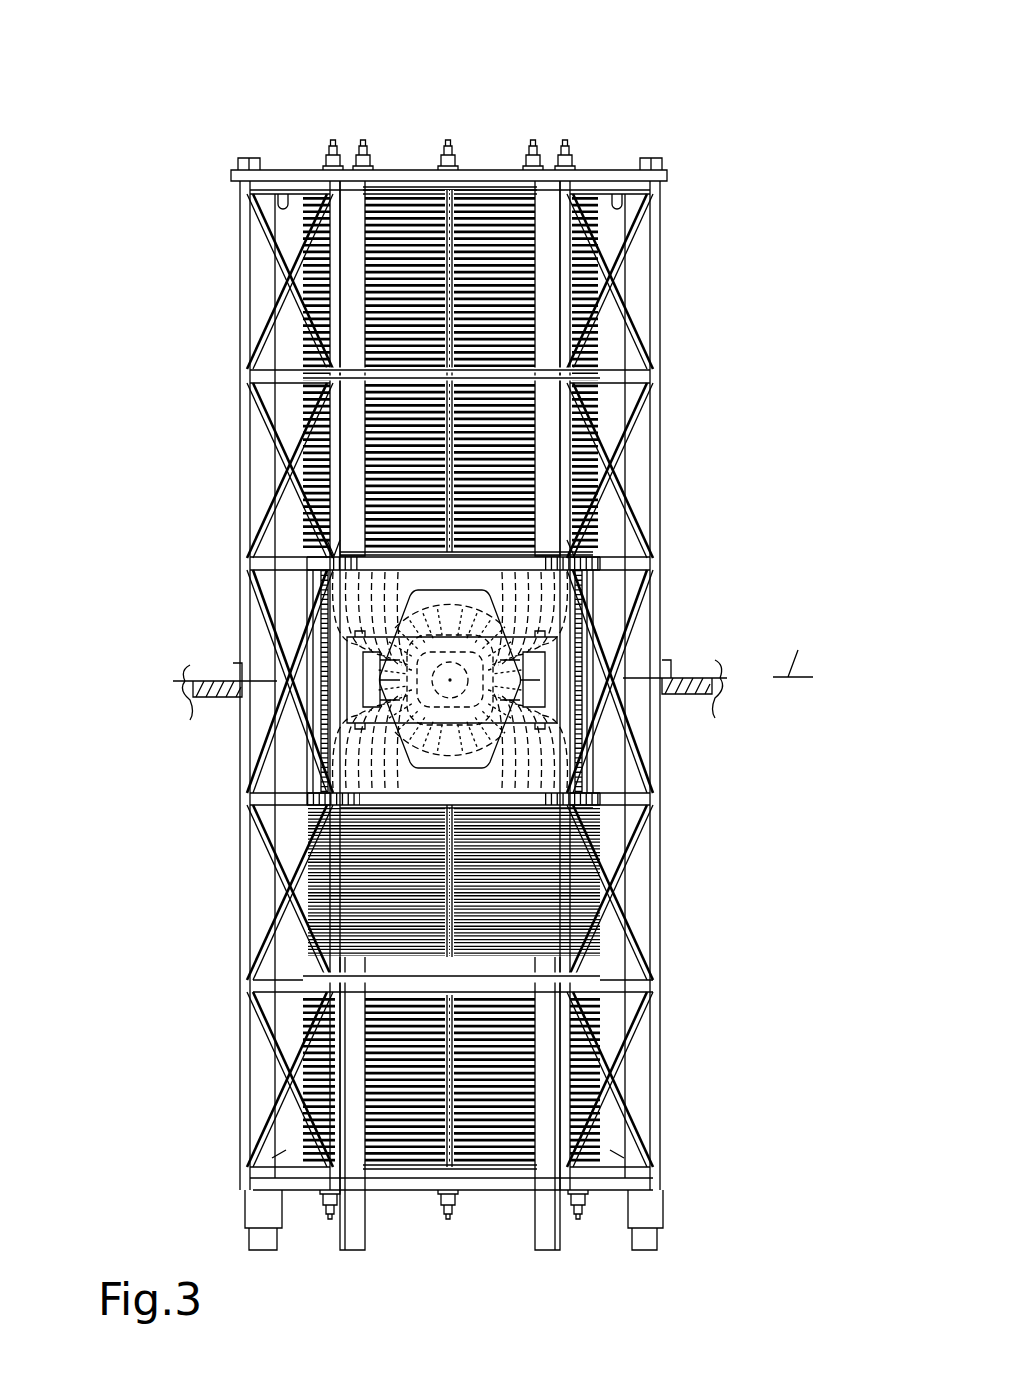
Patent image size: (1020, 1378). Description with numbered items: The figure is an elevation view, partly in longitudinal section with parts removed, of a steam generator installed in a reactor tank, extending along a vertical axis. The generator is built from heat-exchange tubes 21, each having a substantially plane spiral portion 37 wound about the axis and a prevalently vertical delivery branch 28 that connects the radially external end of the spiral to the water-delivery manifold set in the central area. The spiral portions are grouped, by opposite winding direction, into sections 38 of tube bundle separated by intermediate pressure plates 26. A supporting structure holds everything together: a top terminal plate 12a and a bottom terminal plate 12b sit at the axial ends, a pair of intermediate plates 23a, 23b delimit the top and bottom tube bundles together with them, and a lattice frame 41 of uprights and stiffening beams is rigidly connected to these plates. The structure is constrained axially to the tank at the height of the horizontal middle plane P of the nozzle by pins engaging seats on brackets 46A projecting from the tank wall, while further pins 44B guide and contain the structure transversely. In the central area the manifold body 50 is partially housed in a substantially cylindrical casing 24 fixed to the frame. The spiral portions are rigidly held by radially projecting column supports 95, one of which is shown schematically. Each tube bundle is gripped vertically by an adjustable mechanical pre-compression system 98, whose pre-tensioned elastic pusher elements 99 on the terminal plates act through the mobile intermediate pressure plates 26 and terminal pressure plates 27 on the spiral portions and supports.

The adjustable mechanical pre-compression system 98 is at (269, 141).
The pre-tensioned elastic pusher elements 99 is at (367, 162).
The top terminal plate 12a is at (478, 182).
The terminal pressure plates 27 is at (620, 192).
The sections of tube bundle 38 is at (505, 262).
The column supports 95 is at (450, 310).
The intermediate pressure plates 26 is at (580, 373).
The spiral portion 37 is at (505, 425).
The intermediate plate 23a is at (635, 563).
The intermediate plate 23b is at (613, 795).
The brackets 46A is at (690, 677).
The horizontal middle plane P is at (813, 627).
The delivery branch 28 is at (318, 613).
The cylindrical casing 24 is at (530, 683).
The heat-exchange tubes 21 is at (600, 818).
The manifold body 50 is at (400, 683).
The lattice frame 41 is at (248, 935).
The pins 44B is at (262, 1235).
The bottom terminal plate 12b is at (470, 1185).